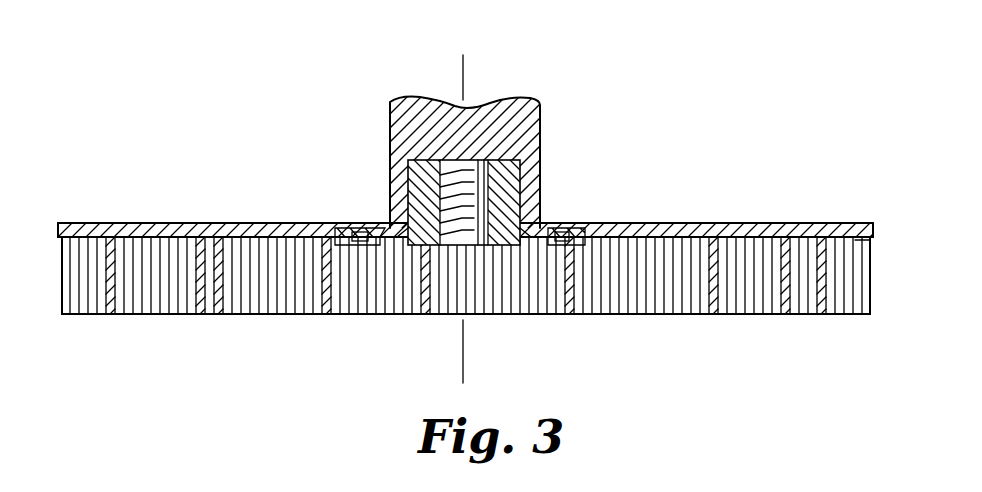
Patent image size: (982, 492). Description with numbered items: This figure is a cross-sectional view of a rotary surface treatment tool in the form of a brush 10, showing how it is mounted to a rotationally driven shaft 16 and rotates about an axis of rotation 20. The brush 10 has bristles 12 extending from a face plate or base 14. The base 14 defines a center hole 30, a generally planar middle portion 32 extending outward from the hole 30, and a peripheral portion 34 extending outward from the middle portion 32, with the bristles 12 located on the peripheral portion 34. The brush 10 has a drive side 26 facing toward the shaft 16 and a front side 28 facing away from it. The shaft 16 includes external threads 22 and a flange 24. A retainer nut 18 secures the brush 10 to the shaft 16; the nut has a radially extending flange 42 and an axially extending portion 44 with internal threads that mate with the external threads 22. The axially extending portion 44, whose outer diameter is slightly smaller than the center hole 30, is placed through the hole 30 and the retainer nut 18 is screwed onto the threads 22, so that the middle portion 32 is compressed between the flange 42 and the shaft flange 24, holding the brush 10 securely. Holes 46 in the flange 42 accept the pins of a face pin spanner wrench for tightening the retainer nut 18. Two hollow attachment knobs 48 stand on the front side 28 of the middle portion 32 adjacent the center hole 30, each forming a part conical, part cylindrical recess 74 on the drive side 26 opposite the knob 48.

The brush 10 is at (858, 224).
The bristles 12 is at (222, 316).
The base 14 is at (758, 228).
The shaft 16 is at (467, 198).
The retainer nut 18 is at (404, 194).
The axis of rotation 20 is at (462, 70).
The external threads 22 is at (447, 172).
The flange 24 is at (541, 120).
The drive side 26 is at (670, 225).
The front side 28 is at (855, 240).
The center hole 30 is at (428, 240).
The middle portion 32 is at (255, 230).
The peripheral portion 34 is at (128, 232).
The radially extending flange 42 is at (345, 244).
The axially extending portion 44 is at (512, 192).
The holes 46 is at (373, 244).
The attachment knobs 48 is at (566, 244).
The recess 74 is at (563, 232).